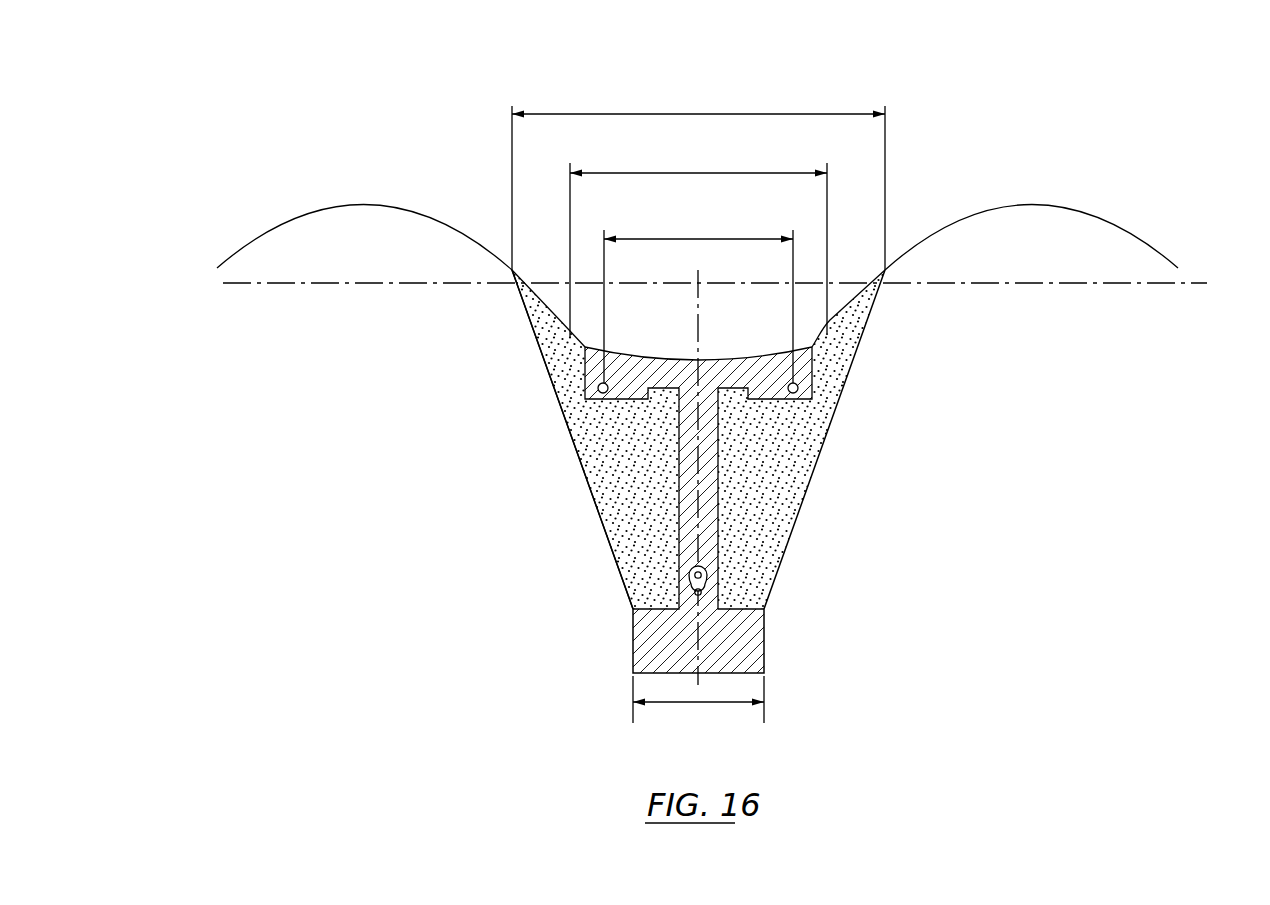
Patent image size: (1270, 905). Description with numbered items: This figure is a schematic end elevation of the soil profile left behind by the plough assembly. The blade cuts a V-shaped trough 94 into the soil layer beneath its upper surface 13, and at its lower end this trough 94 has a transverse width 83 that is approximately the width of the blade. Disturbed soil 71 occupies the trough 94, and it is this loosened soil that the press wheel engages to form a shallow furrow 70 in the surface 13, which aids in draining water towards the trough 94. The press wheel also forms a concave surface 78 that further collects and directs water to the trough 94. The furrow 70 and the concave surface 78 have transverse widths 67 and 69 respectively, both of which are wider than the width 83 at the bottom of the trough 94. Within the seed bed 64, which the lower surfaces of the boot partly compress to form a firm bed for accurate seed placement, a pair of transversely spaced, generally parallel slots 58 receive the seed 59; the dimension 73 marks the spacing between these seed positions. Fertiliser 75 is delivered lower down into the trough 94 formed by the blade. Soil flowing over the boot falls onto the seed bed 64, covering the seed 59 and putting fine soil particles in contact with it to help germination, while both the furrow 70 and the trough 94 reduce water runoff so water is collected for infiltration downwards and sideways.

The upper surface 13 is at (1192, 280).
The furrow 70 is at (472, 175).
The slots 58 is at (628, 375).
The disturbed soil 71 is at (767, 500).
The trough 94 is at (582, 493).
The seed bed 64 is at (585, 392).
The concave surface 78 is at (650, 357).
The seed 59 is at (599, 385).
The fertiliser 75 is at (689, 577).
The transverse width of the furrow 67 is at (627, 113).
The transverse width of the concave surface 69 is at (698, 172).
The aperture spacing 73 is at (753, 238).
The transverse width of the trough lower end 83 is at (698, 703).